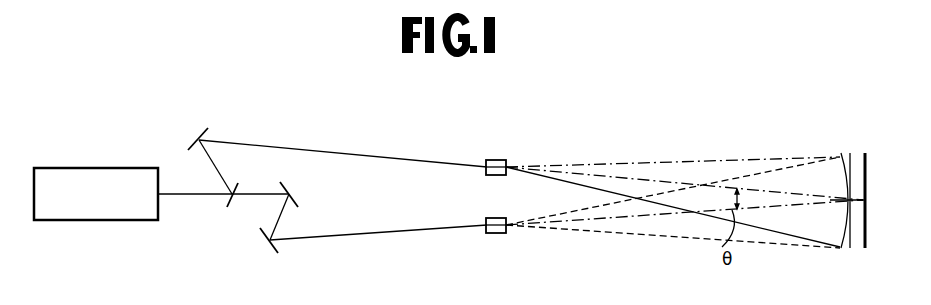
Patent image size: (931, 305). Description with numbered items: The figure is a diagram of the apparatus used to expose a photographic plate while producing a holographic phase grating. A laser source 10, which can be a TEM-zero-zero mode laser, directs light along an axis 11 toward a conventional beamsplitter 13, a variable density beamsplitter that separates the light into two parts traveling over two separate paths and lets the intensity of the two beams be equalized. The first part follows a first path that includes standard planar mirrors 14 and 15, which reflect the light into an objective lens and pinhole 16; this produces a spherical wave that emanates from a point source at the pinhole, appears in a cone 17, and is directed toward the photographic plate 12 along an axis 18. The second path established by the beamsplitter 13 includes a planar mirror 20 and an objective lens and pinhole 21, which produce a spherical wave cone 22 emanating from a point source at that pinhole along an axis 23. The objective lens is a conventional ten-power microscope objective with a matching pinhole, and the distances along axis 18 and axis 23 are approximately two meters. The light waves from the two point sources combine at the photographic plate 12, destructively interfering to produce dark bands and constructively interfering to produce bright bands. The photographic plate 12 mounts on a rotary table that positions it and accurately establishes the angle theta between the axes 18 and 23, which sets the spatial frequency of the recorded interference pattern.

The laser source 10 is at (68, 167).
The axis 11 is at (188, 197).
The photographic plate 12 is at (867, 153).
The beamsplitter 13 is at (226, 213).
The mirror 14 is at (299, 203).
The mirror 15 is at (265, 258).
The objective lens and pinhole 16 is at (495, 234).
The cone 17 is at (692, 240).
The axis 18 is at (612, 226).
The mirror 20 is at (200, 128).
The objective lens and pinhole 21 is at (497, 160).
The spherical wave cone 22 is at (688, 160).
The axis 23 is at (614, 178).